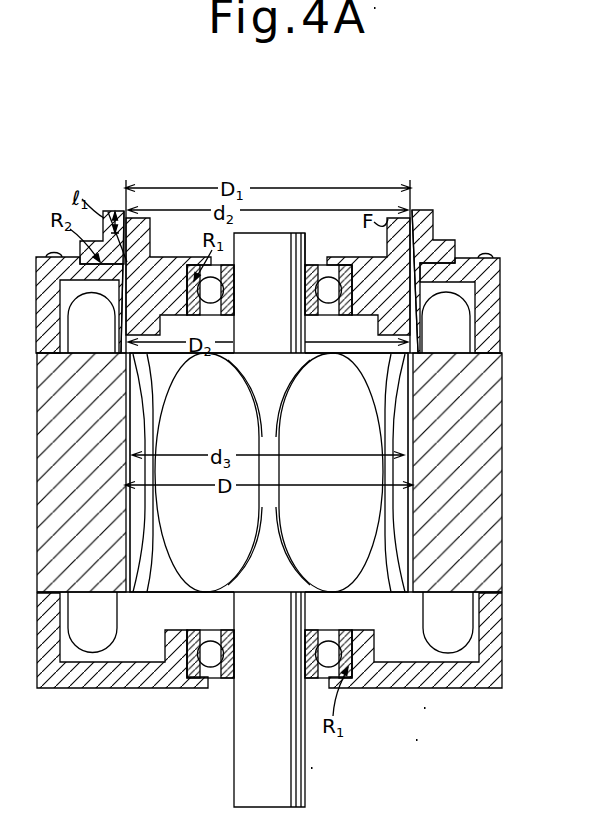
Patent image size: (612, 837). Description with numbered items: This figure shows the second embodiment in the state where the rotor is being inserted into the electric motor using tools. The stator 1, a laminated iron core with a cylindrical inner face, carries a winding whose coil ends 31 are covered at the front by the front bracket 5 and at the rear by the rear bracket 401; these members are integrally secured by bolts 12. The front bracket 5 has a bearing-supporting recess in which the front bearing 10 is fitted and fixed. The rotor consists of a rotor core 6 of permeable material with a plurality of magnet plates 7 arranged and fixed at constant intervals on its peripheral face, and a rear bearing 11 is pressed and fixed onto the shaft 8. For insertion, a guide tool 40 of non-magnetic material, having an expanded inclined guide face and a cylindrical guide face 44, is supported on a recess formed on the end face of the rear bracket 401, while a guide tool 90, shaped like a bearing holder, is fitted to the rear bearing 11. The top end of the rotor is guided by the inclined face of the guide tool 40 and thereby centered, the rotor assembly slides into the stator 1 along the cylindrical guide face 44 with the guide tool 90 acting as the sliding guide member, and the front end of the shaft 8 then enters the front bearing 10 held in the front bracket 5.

The stator 1 is at (497, 508).
The front bracket 5 is at (509, 684).
The rotor core 6 is at (378, 593).
The magnet plate 7 is at (378, 428).
The shaft 8 is at (238, 747).
The front bearing 10 is at (192, 679).
The rear bearing 11 is at (306, 261).
The bolt 12 is at (50, 253).
The stator coil 31 is at (468, 613).
The guide tool 40 is at (441, 240).
The cylindrical guide face 44 is at (128, 330).
The guide tool 90 is at (178, 256).
The rear bracket 401 is at (492, 300).